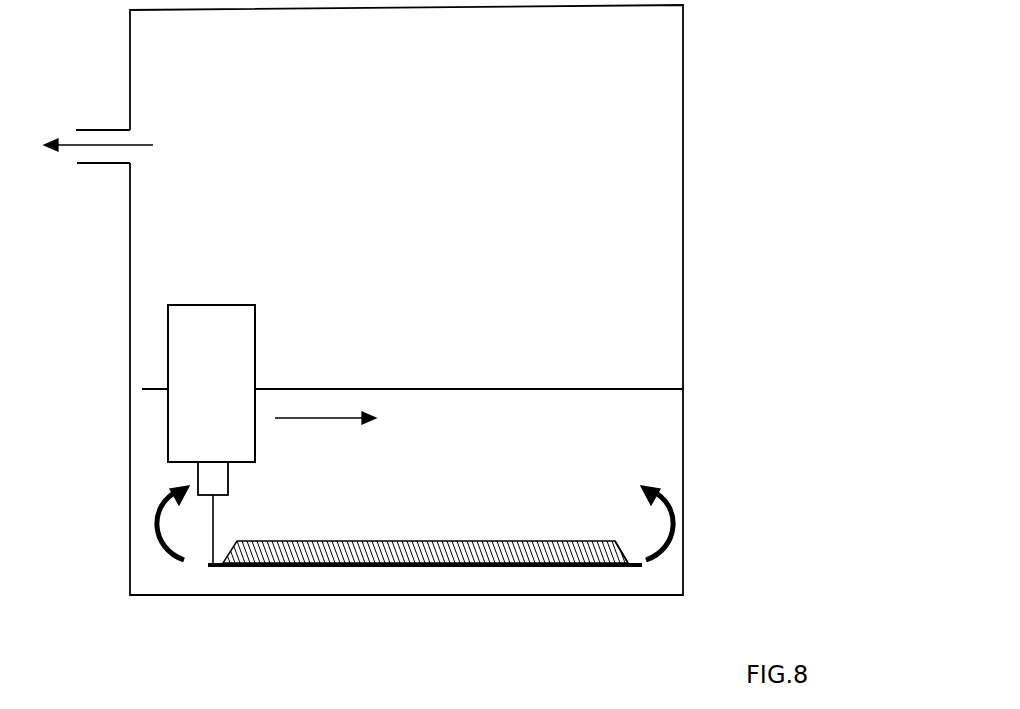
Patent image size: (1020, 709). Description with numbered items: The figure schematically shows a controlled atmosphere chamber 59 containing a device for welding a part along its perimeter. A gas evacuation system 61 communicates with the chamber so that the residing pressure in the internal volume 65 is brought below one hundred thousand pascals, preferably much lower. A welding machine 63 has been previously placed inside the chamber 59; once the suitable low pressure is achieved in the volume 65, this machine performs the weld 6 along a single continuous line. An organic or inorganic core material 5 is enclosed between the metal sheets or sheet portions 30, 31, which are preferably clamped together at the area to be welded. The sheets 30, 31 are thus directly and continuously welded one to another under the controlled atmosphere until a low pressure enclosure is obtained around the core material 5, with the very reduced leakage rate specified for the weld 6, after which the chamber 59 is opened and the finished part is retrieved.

The controlled atmosphere chamber 59 is at (698, 152).
The gas evacuation system 61 is at (108, 143).
The internal volume 65 is at (632, 261).
The welding machine 63 is at (198, 337).
The weld 6 is at (213, 567).
The metal sheet 31 is at (550, 566).
The core material 5 is at (410, 547).
The metal sheet 30 is at (618, 543).